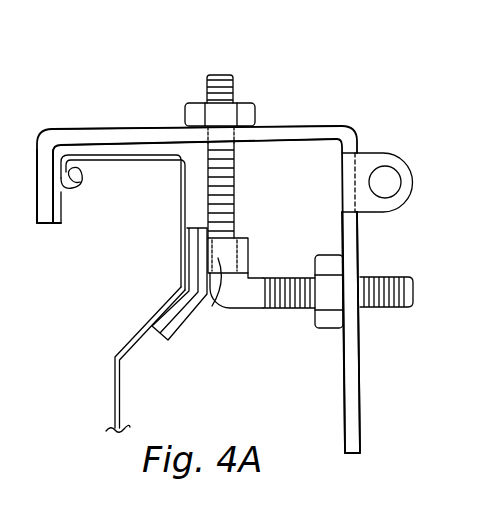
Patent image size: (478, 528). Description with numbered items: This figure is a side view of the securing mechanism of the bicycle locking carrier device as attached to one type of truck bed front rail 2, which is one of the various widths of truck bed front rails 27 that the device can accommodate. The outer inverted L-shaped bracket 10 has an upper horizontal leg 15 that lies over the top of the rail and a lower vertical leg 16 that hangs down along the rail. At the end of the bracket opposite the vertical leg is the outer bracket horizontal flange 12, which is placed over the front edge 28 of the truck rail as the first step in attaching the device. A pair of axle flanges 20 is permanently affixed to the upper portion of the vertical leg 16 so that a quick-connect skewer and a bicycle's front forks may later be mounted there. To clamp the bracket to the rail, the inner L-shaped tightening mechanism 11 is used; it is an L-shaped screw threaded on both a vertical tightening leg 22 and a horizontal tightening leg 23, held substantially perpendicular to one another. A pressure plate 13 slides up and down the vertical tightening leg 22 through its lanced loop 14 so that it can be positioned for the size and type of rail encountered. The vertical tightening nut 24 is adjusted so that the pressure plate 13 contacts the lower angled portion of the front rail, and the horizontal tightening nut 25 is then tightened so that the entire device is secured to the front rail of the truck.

The truck bed front rail 2 is at (113, 394).
The outer inverted L-shaped bracket 10 is at (340, 126).
The inner L-shaped tightening mechanism 11 is at (258, 293).
The outer bracket horizontal flange 12 is at (45, 213).
The pressure plate 13 is at (172, 321).
The lanced loop 14 is at (213, 306).
The upper horizontal leg 15 is at (72, 136).
The lower vertical leg 16 is at (362, 384).
The axle flange 20 is at (404, 164).
The vertical tightening leg 22 is at (204, 82).
The horizontal tightening leg 23 is at (393, 306).
The vertical tightening nut 24 is at (254, 113).
The horizontal tightening nut 25 is at (322, 327).
The truck bed front rail 27 is at (133, 154).
The front edge 28 is at (76, 189).